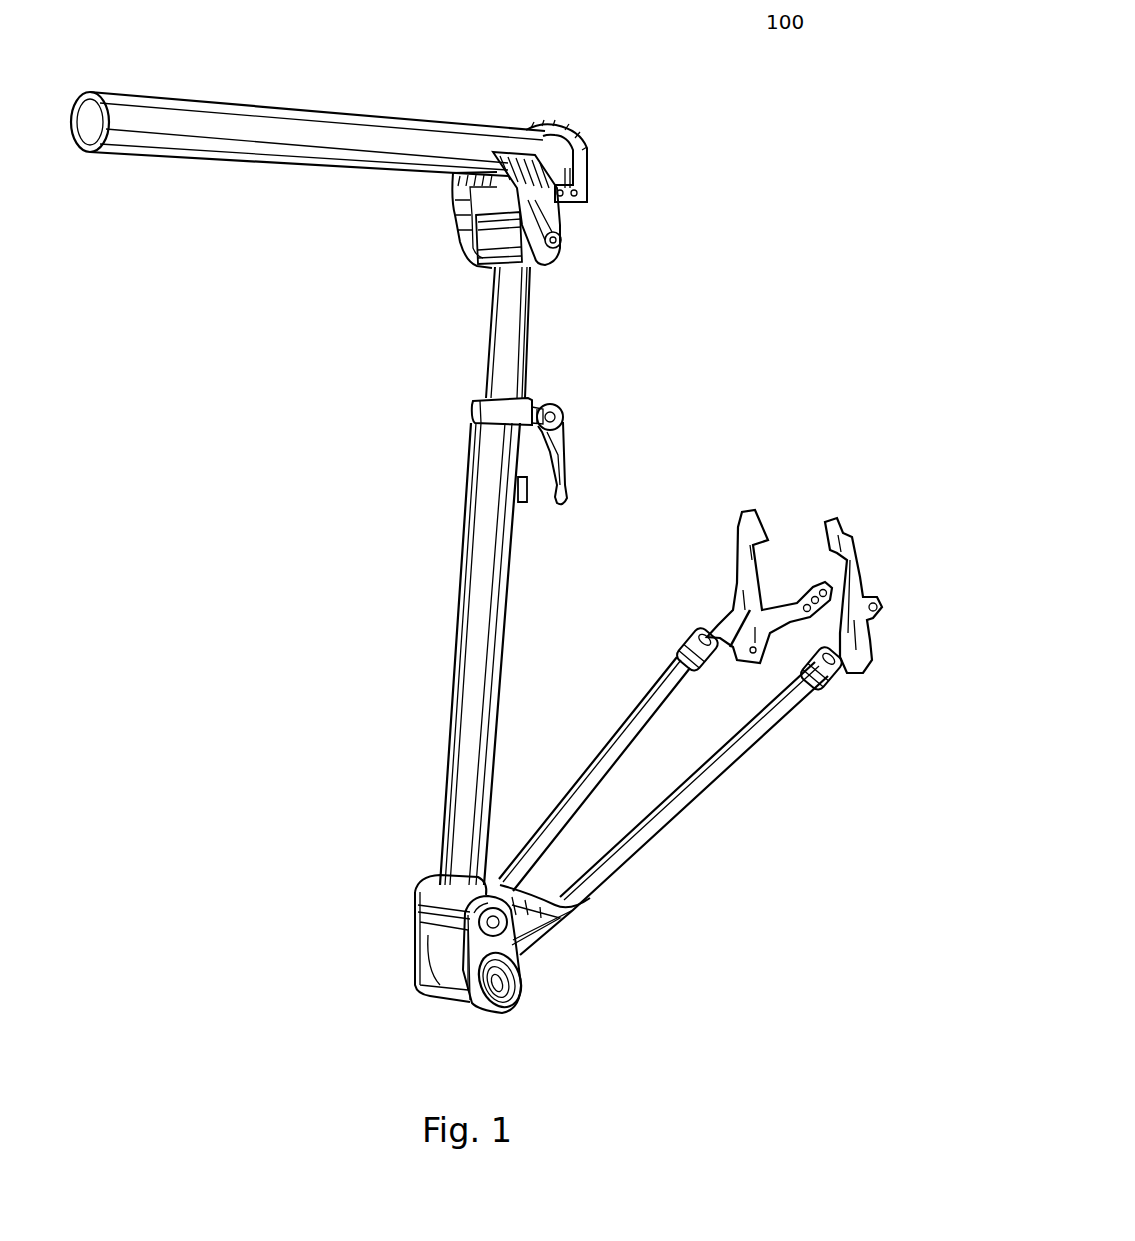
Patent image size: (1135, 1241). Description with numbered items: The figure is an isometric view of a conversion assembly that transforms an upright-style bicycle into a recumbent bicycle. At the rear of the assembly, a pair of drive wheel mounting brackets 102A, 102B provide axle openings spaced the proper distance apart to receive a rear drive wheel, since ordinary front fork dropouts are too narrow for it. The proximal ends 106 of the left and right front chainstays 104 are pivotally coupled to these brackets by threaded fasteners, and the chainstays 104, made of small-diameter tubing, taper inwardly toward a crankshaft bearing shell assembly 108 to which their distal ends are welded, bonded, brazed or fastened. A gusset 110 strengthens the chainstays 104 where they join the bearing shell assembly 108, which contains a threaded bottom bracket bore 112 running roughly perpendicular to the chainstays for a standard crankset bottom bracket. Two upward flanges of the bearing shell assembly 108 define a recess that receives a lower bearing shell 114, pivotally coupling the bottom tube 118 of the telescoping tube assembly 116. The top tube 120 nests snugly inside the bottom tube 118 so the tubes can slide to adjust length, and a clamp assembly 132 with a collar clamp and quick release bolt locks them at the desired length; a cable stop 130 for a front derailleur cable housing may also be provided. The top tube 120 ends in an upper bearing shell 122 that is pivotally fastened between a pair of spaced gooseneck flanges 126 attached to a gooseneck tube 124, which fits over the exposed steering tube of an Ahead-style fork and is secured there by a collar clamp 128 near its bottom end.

The drive wheel mounting bracket 102A is at (856, 570).
The drive wheel mounting bracket 102B is at (738, 545).
The front chainstay 104 is at (600, 742).
The proximal end 106 is at (682, 634).
The crankshaft bearing shell assembly 108 is at (416, 950).
The gusset 110 is at (572, 907).
The bottom bracket bore 112 is at (525, 972).
The lower bearing shell 114 is at (424, 878).
The telescoping tube assembly 116 is at (418, 455).
The bottom tube 118 is at (470, 501).
The top tube 120 is at (496, 325).
The upper bearing shell 122 is at (480, 246).
The gooseneck tube 124 is at (240, 100).
The gooseneck flanges 126 is at (456, 200).
The collar clamp 128 is at (587, 158).
The cable stop 130 is at (527, 497).
The clamp assembly 132 is at (566, 438).